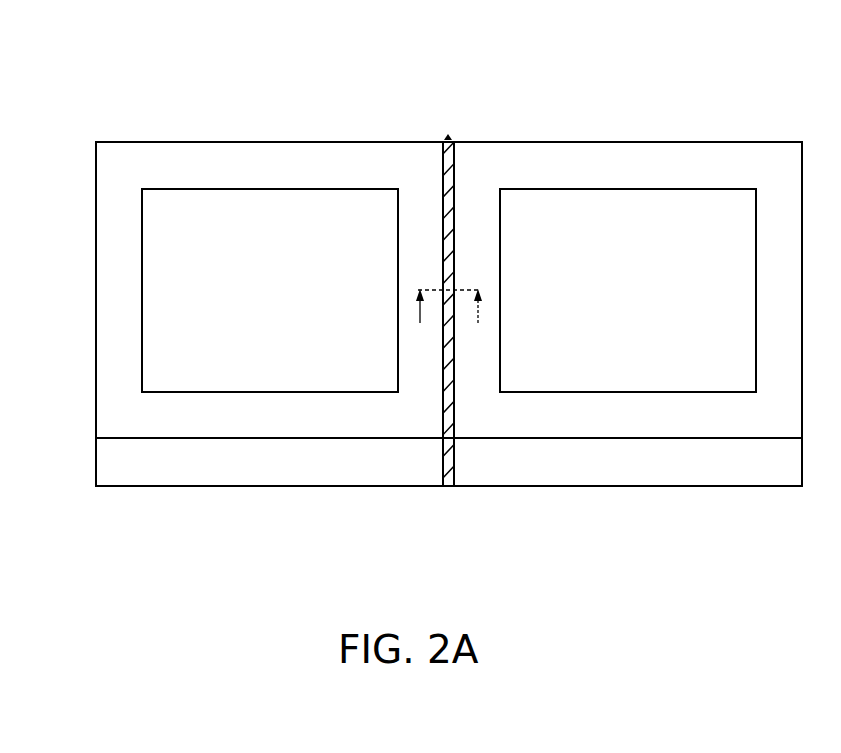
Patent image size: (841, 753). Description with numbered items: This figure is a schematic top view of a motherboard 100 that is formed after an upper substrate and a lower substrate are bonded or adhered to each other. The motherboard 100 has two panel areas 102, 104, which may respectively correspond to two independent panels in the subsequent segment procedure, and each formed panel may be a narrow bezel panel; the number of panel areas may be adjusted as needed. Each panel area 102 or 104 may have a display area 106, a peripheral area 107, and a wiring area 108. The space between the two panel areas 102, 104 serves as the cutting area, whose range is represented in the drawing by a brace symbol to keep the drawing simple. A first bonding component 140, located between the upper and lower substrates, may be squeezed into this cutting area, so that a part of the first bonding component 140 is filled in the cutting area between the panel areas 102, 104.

The motherboard 100 is at (60, 49).
The panel area 102 is at (358, 136).
The panel area 104 is at (519, 136).
The display area 106 is at (203, 404).
The peripheral area 107 is at (279, 450).
The wiring area 108 is at (372, 498).
The first bonding component 140 is at (450, 409).